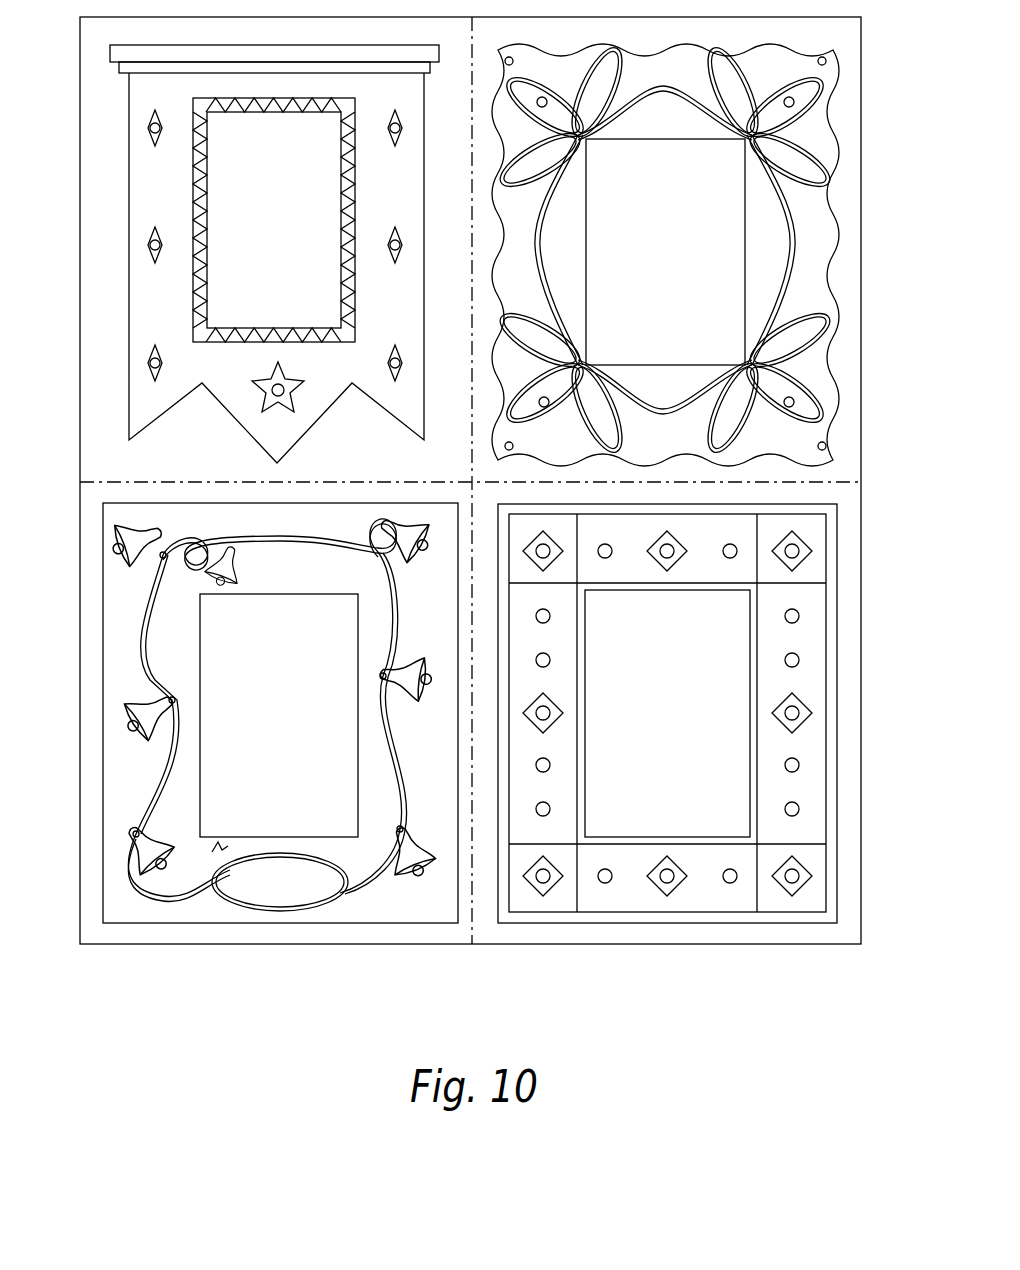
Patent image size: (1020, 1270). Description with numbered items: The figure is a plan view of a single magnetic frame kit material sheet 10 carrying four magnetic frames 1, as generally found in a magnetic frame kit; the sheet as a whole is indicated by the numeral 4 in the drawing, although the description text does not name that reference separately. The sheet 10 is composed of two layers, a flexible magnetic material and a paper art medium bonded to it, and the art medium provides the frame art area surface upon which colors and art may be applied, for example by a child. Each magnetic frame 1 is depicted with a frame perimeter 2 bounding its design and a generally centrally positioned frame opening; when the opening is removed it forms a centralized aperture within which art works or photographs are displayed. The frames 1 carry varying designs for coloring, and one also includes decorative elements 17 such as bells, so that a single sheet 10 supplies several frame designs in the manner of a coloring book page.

The magnetic frame 1 is at (848, 442).
The frame perimeter 2 is at (833, 69).
The frame assembly sheet 4 is at (160, 1024).
The magnetic frame kit material sheet 10 is at (812, 947).
The decorative elements 17 is at (396, 868).